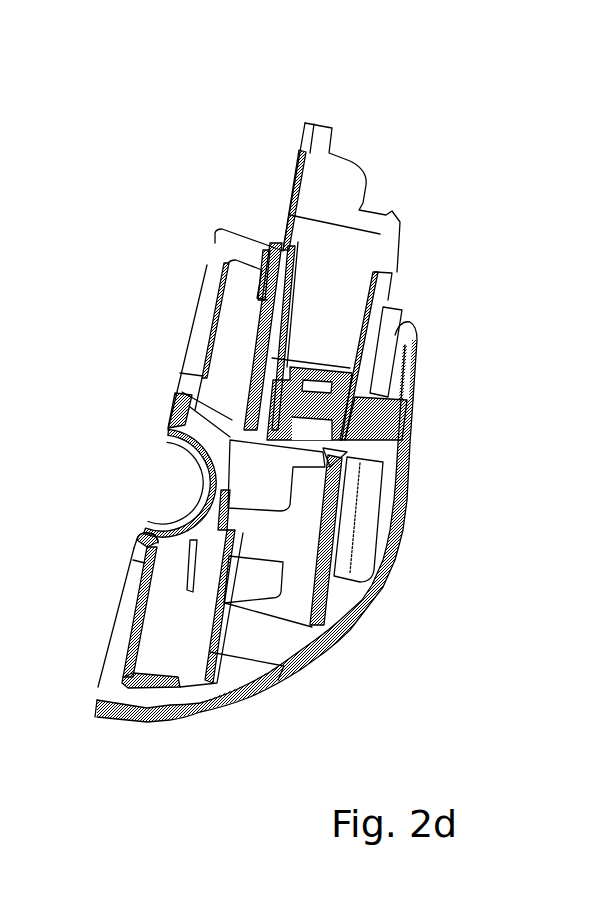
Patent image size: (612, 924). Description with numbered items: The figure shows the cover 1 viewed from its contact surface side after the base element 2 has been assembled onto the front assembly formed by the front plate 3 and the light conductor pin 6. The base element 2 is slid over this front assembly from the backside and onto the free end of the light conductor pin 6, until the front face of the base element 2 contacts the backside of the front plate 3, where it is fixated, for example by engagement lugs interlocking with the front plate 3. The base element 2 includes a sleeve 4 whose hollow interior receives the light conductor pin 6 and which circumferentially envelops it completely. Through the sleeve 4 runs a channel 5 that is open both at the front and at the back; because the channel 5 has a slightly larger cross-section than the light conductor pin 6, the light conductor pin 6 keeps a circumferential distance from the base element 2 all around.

The cover 1 is at (168, 112).
The base element 2 is at (348, 188).
The front plate 3 is at (357, 603).
The sleeve 4 is at (373, 513).
The channel 5 is at (417, 355).
The light conductor pin 6 is at (387, 340).